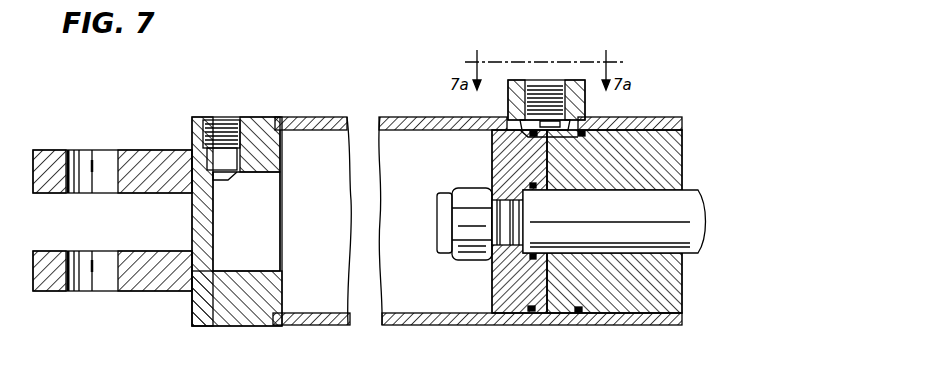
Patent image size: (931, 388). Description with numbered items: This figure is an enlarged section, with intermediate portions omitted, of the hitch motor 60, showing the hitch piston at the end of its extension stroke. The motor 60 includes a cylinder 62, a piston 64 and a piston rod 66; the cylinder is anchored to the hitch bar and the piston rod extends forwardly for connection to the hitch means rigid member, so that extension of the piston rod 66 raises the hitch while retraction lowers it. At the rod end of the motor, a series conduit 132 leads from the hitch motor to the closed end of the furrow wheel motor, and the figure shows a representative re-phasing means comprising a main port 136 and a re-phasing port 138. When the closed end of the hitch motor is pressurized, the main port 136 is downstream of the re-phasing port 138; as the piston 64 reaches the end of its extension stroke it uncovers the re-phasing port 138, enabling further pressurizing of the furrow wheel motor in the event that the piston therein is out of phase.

The motor 60 is at (315, 108).
The cylinder 62 is at (317, 326).
The piston 64 is at (503, 283).
The piston rod 66 is at (684, 208).
The series conduit 132 is at (539, 76).
The main port 136 is at (556, 127).
The re-phasing port 138 is at (522, 133).